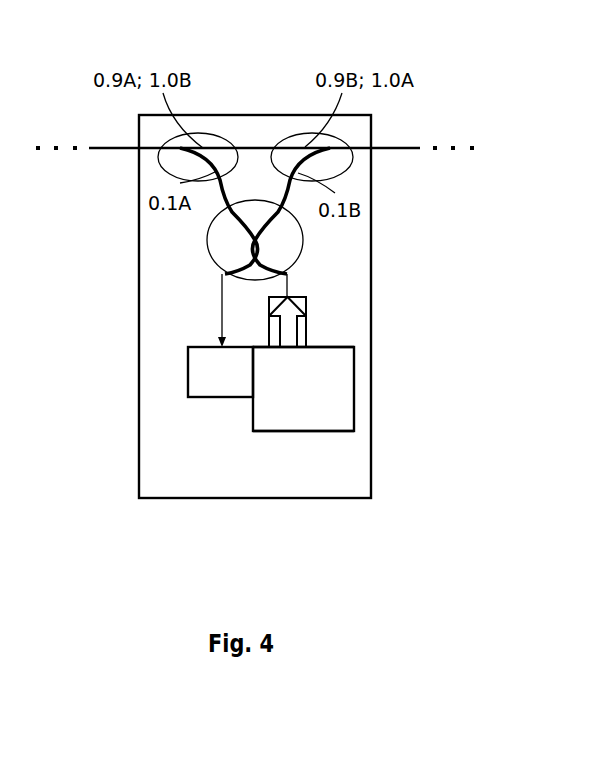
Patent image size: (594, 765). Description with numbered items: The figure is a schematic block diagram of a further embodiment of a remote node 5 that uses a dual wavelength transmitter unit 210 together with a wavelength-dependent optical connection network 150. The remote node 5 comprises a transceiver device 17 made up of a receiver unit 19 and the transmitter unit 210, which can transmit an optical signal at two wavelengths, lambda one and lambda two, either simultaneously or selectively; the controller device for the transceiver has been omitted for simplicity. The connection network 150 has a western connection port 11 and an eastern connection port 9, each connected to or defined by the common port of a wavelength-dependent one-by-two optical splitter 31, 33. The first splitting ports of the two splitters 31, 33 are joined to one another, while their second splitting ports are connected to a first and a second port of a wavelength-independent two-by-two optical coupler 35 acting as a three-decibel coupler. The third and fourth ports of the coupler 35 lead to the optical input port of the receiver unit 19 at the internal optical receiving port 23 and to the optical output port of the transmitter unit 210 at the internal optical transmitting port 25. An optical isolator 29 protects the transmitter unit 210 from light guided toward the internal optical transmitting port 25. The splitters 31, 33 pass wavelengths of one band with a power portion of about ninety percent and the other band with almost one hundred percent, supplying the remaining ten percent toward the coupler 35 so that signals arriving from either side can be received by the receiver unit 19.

The remote node 5 is at (362, 407).
The eastern connection port 9 is at (377, 148).
The western connection port 11 is at (137, 150).
The transceiver device 17 is at (246, 414).
The receiver unit 19 is at (190, 385).
The internal optical receiving port 23 is at (222, 345).
The internal optical transmitting port 25 is at (289, 296).
The optical isolator 29 is at (300, 348).
The optical 1×2 splitter 31 is at (220, 137).
The optical 1×2 splitter 33 is at (335, 163).
The optical 2×2 coupler 35 is at (207, 238).
The wavelength-dependent optical connection network 150 is at (300, 212).
The dual wavelength transmitter unit 210 is at (290, 430).